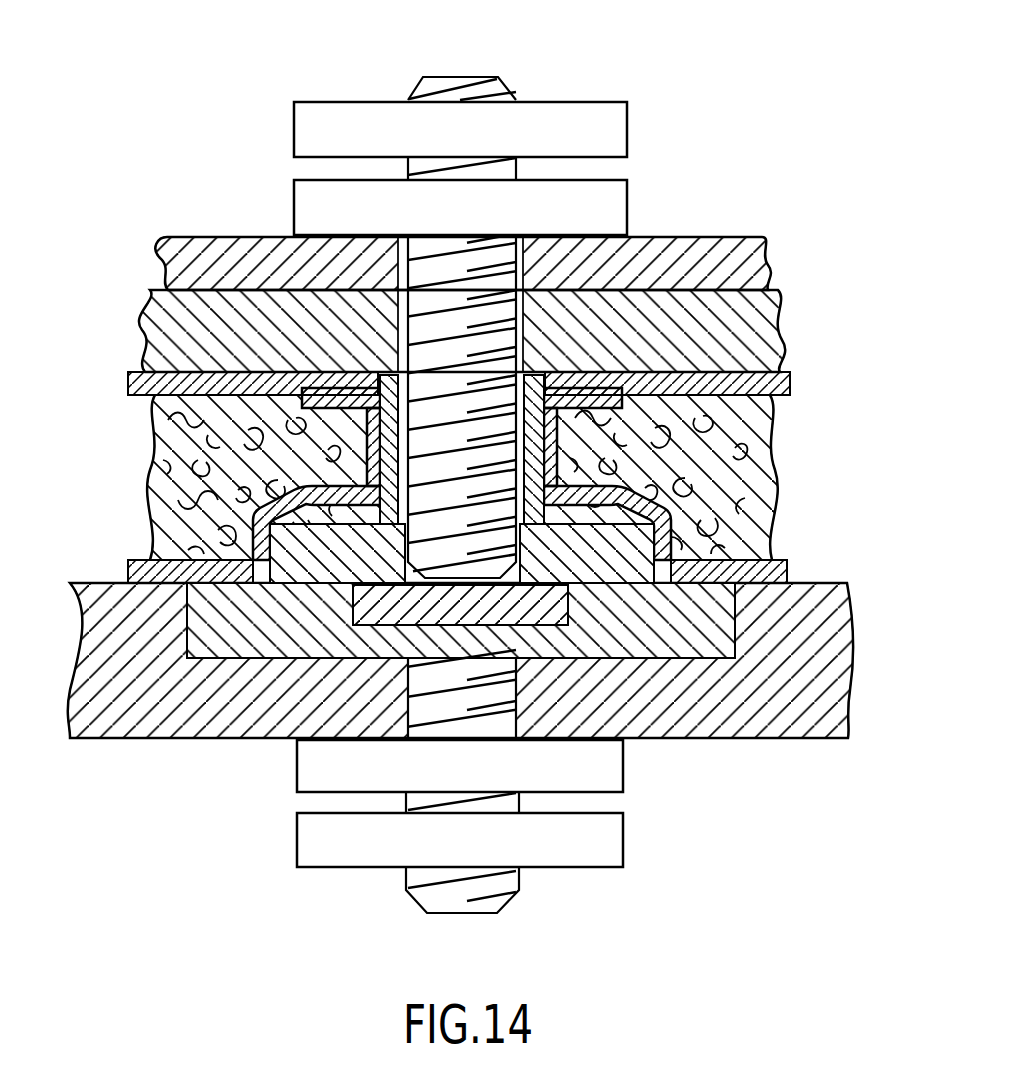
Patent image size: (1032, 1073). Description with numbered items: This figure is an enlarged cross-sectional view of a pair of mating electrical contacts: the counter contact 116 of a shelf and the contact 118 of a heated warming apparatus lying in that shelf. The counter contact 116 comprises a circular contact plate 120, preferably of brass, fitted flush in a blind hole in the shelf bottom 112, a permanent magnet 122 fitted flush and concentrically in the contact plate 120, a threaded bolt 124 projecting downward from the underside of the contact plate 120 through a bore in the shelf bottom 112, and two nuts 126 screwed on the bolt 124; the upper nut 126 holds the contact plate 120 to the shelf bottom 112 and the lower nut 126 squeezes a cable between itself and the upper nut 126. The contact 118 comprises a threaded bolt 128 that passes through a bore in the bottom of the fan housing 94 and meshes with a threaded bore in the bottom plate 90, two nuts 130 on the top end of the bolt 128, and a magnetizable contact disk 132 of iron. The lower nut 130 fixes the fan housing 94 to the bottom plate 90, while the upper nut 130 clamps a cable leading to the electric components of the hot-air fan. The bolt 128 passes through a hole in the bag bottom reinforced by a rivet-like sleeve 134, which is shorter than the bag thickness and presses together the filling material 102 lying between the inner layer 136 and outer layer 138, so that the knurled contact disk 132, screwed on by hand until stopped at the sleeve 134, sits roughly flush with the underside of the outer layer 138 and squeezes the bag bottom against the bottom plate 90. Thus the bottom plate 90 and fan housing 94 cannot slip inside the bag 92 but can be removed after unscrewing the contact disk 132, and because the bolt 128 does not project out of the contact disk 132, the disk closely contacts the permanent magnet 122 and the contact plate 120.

The bottom plate 90 is at (140, 337).
The bag 92 is at (149, 469).
The fan housing 94 is at (187, 234).
The filling material 102 is at (773, 480).
The shelf bottom 112 is at (142, 738).
The counter contact 116 is at (345, 870).
The contact 118 is at (614, 101).
The contact plate 120 is at (602, 628).
The permanent magnet 122 is at (442, 616).
The threaded bolt 124 is at (520, 890).
The nuts 126 is at (545, 781).
The threaded bolt 128 is at (503, 78).
The nuts 130 is at (310, 146).
The contact disk 132 is at (563, 566).
The sleeve 134 is at (367, 505).
The inner layer 136 is at (793, 373).
The outer layer 138 is at (787, 565).